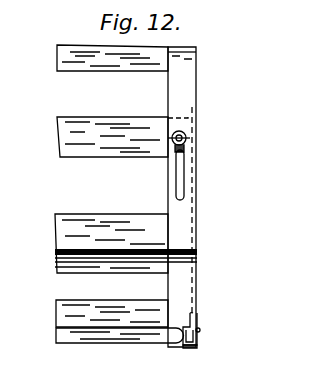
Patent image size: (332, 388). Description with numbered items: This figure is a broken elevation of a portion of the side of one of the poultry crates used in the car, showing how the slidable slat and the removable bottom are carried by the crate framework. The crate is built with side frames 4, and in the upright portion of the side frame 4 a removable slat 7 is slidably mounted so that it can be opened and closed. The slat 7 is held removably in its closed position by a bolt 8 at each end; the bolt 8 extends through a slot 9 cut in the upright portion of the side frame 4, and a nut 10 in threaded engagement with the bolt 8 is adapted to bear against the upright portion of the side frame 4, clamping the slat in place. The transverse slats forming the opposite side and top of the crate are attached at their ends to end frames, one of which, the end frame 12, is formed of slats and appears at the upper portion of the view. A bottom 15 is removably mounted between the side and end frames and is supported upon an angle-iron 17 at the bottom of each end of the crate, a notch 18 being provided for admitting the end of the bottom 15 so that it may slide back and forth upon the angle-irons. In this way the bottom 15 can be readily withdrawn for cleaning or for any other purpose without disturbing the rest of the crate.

The side frame 4 is at (183, 217).
The removable slat 7 is at (115, 157).
The bolt 8 is at (184, 134).
The slot 9 is at (181, 170).
The nut 10 is at (186, 141).
The end frame 12 is at (190, 72).
The bottom 15 is at (102, 338).
The angle-iron 17 is at (187, 348).
The notch 18 is at (181, 326).